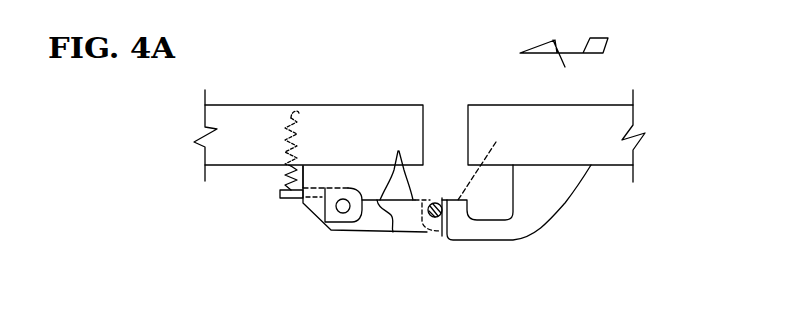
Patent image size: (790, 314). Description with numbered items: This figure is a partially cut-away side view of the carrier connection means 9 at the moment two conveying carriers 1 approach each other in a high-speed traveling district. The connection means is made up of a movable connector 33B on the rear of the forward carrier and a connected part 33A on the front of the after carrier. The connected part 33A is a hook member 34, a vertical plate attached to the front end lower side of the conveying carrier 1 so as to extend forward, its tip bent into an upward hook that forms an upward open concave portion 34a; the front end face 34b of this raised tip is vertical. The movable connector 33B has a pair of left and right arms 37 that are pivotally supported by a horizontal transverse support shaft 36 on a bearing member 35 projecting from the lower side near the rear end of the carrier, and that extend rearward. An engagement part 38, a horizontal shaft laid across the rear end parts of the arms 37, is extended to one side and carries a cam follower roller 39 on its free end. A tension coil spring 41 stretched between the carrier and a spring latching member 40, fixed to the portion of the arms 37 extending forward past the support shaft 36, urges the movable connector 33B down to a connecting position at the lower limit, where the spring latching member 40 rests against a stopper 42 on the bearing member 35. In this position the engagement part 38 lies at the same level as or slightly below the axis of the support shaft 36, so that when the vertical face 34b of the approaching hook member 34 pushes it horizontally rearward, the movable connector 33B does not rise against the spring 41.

The conveying carrier 1 is at (239, 105).
The carrier connection means 9 is at (423, 181).
The movable connector 33B is at (319, 181).
The connected part 33A is at (508, 187).
The hook member 34 is at (477, 241).
The concave portion 34a is at (482, 210).
The front end face 34b is at (424, 226).
The bearing member 35 is at (347, 187).
The support shaft 36 is at (338, 223).
The arms 37 is at (395, 163).
The engagement part 38 is at (435, 202).
The cam follower roller 39 is at (493, 159).
The spring latching member 40 is at (280, 194).
The tension coil spring 41 is at (289, 171).
The stopper 42 is at (316, 188).